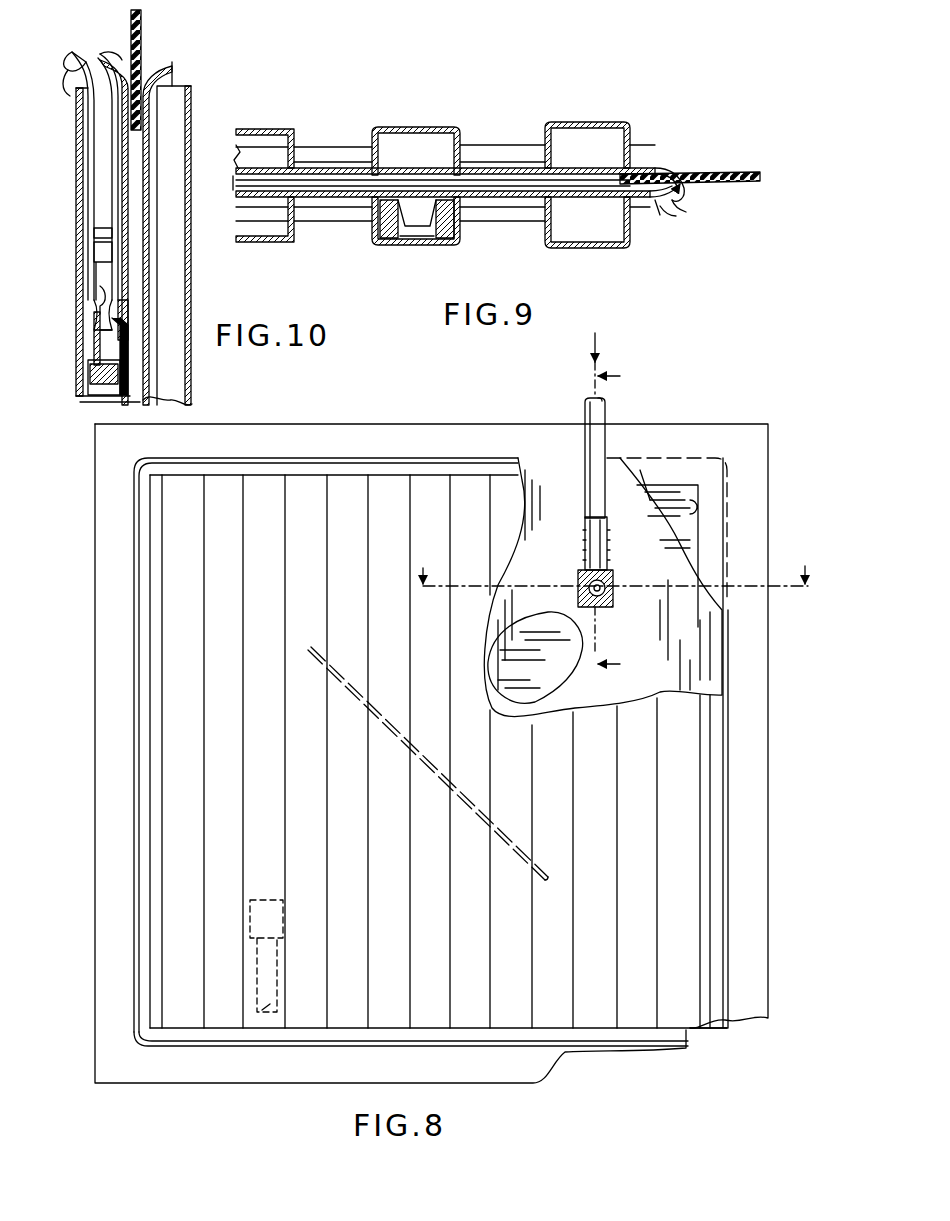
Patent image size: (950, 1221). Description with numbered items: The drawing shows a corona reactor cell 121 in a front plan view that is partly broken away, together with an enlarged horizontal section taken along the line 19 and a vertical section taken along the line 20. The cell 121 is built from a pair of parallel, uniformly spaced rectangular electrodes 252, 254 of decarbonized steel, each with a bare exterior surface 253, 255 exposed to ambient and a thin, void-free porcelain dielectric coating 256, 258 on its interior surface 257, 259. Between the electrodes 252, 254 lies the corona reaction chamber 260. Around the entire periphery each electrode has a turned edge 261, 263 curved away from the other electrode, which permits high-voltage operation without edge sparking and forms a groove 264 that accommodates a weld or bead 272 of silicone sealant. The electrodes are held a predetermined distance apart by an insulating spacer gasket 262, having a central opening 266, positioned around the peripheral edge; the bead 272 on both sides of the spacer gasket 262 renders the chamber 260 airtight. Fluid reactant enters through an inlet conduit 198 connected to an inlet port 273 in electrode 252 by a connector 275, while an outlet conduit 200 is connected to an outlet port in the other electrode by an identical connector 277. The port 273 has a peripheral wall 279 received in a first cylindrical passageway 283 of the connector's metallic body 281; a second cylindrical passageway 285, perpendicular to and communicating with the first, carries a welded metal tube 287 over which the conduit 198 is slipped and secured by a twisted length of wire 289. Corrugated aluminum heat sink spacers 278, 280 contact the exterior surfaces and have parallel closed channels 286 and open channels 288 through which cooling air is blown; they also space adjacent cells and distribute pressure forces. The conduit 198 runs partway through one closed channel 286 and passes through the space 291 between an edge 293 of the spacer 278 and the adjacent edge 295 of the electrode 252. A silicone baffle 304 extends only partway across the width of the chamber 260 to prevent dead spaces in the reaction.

In FIG. 8, the section line 19— 19 is at (612, 564).
In FIG. 8, the section line 20— 20 is at (622, 505).
In FIG. 8, the corona reactor cell 121 is at (380, 412).
In FIG. 10, the inlet conduit 198 is at (88, 128).
In FIG. 8, the inlet conduit 198 is at (586, 484).
In FIG. 8, the outlet conduit 200 is at (277, 993).
In FIG. 10, the electrode 252 is at (90, 405).
In FIG. 9, the electrode 252 is at (548, 215).
In FIG. 8, the electrode 252 is at (538, 470).
In FIG. 9, the bare exterior surface 253 is at (270, 200).
In FIG. 10, the electrode 254 is at (192, 402).
In FIG. 9, the electrode 254 is at (548, 142).
In FIG. 8, the electrode 254 is at (680, 485).
In FIG. 9, the bare exterior surface 255 is at (270, 170).
In FIG. 9, the dielectric coating 256 is at (680, 210).
In FIG. 9, the interior surface 257 is at (682, 198).
In FIG. 9, the dielectric coating 258 is at (684, 170).
In FIG. 9, the interior surface 259 is at (682, 174).
In FIG. 10, the corona reaction chamber 260 is at (140, 400).
In FIG. 9, the corona reaction chamber 260 is at (368, 188).
In FIG. 8, the corona reaction chamber 260 is at (546, 676).
In FIG. 9, the turned edge 261 is at (660, 205).
In FIG. 8, the turned edge 261 is at (726, 800).
In FIG. 10, the spacer gasket 262 is at (142, 52).
In FIG. 9, the spacer gasket 262 is at (745, 182).
In FIG. 8, the spacer gasket 262 is at (95, 560).
In FIG. 9, the turned edge 263 is at (668, 150).
In FIG. 9, the groove 264 is at (700, 162).
In FIG. 8, the central opening 266 is at (700, 508).
In FIG. 9, the weld or bead 272 is at (690, 165).
In FIG. 10, the inlet port 273 is at (128, 338).
In FIG. 9, the inlet port 273 is at (416, 230).
In FIG. 8, the inlet port 273 is at (610, 600).
In FIG. 10, the connector 275 is at (92, 362).
In FIG. 9, the connector 275 is at (450, 240).
In FIG. 8, the connector 275 is at (578, 580).
In FIG. 8, the connector 277 is at (264, 898).
In FIG. 10, the heat sink spacer 278 is at (77, 388).
In FIG. 9, the heat sink spacer 278 is at (584, 248).
In FIG. 8, the heat sink spacer 278 is at (165, 736).
In FIG. 10, the peripheral wall 279 is at (128, 312).
In FIG. 9, the peripheral wall 279 is at (382, 240).
In FIG. 10, the heat sink spacer 280 is at (192, 368).
In FIG. 9, the heat sink spacer 280 is at (568, 122).
In FIG. 10, the metallic body 281 is at (90, 378).
In FIG. 10, the first cylindrical passageway 283 is at (96, 336).
In FIG. 10, the second cylindrical passageway 285 is at (100, 294).
In FIG. 9, the closed channel 286 is at (416, 151).
In FIG. 10, the tube 287 is at (96, 274).
In FIG. 8, the tube 287 is at (607, 548).
In FIG. 9, the open channel 288 is at (334, 132).
In FIG. 8, the wire 289 is at (585, 530).
In FIG. 10, the space 291 is at (70, 52).
In FIG. 10, the edge 293 is at (68, 80).
In FIG. 10, the edge 295 is at (104, 52).
In FIG. 9, the silicone baffle 304 is at (306, 197).
In FIG. 8, the silicone baffle 304 is at (395, 738).